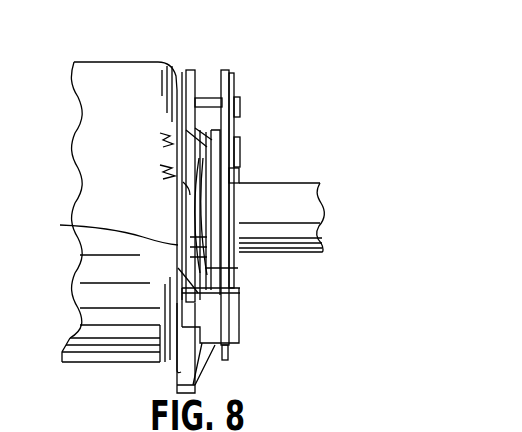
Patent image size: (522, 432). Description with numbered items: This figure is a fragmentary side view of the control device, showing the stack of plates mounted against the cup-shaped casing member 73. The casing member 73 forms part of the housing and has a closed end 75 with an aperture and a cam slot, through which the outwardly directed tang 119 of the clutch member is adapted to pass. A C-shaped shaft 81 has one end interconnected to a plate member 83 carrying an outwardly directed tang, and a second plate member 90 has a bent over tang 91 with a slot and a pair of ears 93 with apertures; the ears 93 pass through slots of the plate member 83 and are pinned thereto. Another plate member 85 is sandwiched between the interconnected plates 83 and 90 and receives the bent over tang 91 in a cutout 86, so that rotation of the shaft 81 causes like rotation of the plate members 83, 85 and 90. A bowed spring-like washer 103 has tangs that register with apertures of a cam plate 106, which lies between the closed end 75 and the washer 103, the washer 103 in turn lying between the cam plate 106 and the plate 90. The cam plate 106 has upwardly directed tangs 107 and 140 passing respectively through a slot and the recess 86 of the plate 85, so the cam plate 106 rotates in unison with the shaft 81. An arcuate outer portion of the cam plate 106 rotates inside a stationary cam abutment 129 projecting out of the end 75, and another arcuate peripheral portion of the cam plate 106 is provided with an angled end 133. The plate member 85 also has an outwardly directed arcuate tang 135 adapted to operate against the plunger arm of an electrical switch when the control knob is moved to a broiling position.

The cup-shaped casing member 73 is at (115, 62).
The closed end 75 is at (186, 70).
The cam plate 106 is at (197, 82).
The plate member 85 is at (231, 85).
The upwardly directed tang 107 is at (241, 108).
The plate member 90 is at (221, 147).
The ears 93 is at (241, 153).
The plate member 83 is at (238, 174).
The C-shaped shaft 81 is at (318, 252).
The outwardly directed tang 119 is at (162, 136).
The angled end 133 is at (196, 153).
The stationary cam abutment 129 is at (110, 252).
The bowed spring-like washer 103 is at (238, 268).
The bent over tang 91 is at (239, 291).
The upwardly directed tang 140 is at (240, 322).
The cutout 86 is at (229, 353).
The outwardly directed arcuate tang 135 is at (196, 386).